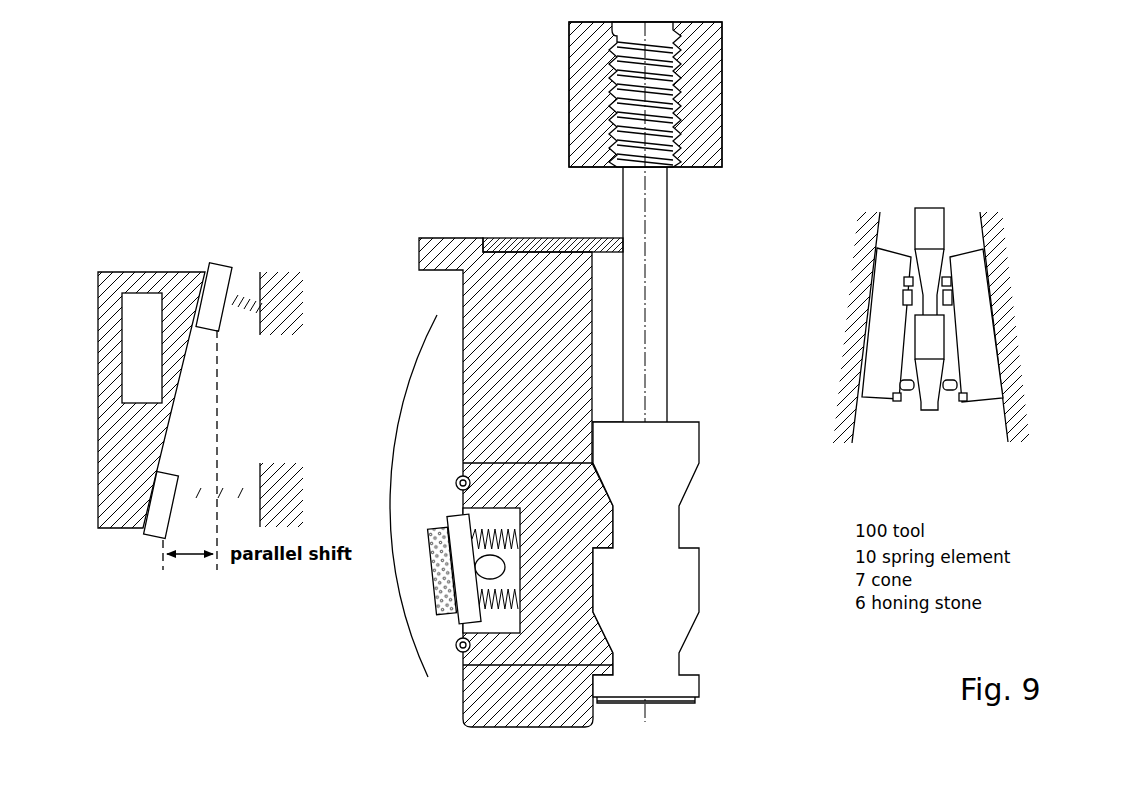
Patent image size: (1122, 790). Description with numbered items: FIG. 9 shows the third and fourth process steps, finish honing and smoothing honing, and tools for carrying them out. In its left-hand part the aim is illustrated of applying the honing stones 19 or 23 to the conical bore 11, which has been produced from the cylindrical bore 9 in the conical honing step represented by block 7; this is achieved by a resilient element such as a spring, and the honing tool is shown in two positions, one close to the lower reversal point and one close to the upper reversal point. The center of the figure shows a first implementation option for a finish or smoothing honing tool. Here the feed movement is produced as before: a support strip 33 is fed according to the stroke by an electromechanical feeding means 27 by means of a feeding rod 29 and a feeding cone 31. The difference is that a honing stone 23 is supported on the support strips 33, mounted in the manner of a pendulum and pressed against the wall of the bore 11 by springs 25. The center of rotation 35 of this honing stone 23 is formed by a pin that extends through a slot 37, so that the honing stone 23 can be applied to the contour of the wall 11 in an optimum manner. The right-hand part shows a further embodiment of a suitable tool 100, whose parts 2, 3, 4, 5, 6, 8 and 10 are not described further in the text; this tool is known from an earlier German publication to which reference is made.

The workpiece bore wall 2 is at (902, 244).
The workpiece bore wall 3 is at (997, 243).
The guide rail 4 is at (872, 333).
The bore surface 5 is at (995, 333).
The honing stone 6 is at (878, 370).
The block 7 is at (933, 259).
The support element 8 is at (906, 293).
The cylindrical bore 9 is at (928, 226).
The spring element 10 is at (905, 283).
The conical bore 11 is at (164, 458).
The honing stone 19 is at (157, 525).
The honing stone 23 is at (437, 595).
The springs 25 is at (247, 300).
The electromechanical feeding means 27 is at (708, 102).
The feeding rod 29 is at (647, 330).
The feeding cone 31 is at (690, 630).
The support strip 33 is at (497, 655).
The center of rotation 35 is at (457, 568).
The slot 37 is at (497, 572).
The tool 100 is at (959, 226).